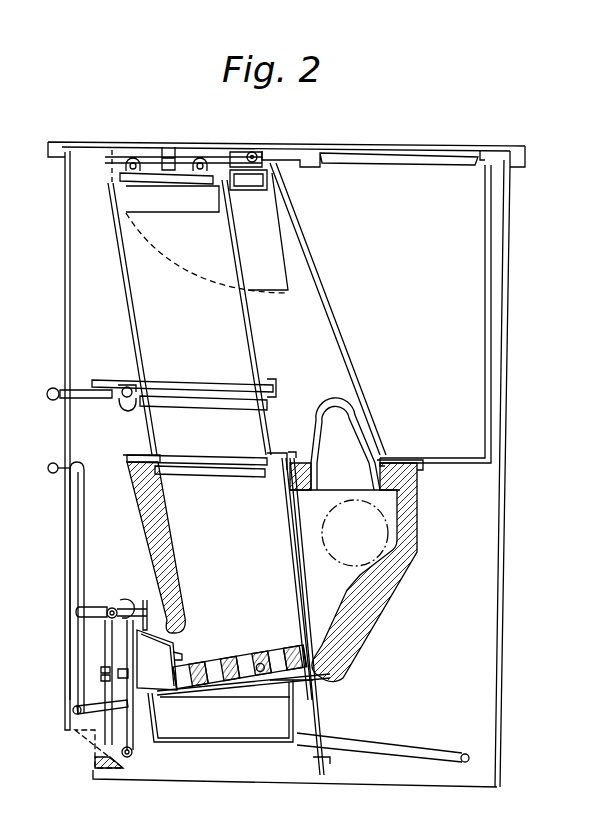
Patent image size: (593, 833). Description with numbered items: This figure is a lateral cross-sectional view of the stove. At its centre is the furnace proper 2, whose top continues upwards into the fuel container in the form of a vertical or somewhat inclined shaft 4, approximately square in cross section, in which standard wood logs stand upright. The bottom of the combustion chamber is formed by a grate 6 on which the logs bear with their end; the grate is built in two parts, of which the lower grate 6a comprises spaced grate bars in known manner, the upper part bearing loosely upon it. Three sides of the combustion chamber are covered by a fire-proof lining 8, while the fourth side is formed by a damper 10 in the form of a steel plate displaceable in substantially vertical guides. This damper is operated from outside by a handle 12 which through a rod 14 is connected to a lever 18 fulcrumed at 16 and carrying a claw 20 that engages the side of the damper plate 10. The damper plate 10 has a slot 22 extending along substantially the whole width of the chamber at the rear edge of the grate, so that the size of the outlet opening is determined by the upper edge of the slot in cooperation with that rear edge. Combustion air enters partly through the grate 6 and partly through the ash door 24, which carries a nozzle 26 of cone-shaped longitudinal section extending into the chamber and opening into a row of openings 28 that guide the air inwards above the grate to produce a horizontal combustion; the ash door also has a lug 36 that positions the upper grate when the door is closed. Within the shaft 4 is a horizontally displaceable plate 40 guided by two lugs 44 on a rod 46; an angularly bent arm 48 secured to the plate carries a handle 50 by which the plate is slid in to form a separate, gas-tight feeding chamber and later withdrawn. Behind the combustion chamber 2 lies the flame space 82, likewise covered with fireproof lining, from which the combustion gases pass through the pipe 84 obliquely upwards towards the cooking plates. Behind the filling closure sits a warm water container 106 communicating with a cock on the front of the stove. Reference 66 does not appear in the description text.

The furnace proper 2 is at (180, 546).
The shaft 4 is at (140, 266).
The grate 6 is at (210, 666).
The lower grate 6a is at (222, 675).
The fire-proof lining 8 is at (160, 520).
The damper 10 is at (291, 547).
The handle 12 is at (55, 463).
The rod 14 is at (76, 692).
The fulcrum 16 is at (468, 756).
The lever 18 is at (76, 724).
The claw 20 is at (340, 758).
The slot 22 is at (303, 654).
The ash door 24 is at (92, 732).
The nozzle 26 is at (147, 640).
The openings 28 is at (172, 650).
The lug 36 is at (172, 657).
The horizontally displaceable plate 40 is at (206, 390).
The lugs 44 is at (128, 386).
The rod 46 is at (129, 406).
The angularly bent arm 48 is at (93, 398).
The handle 50 is at (44, 399).
The grate bar 66 is at (268, 652).
The flame space 82 is at (370, 612).
The pipe 84 is at (347, 418).
The warm water container 106 is at (482, 256).